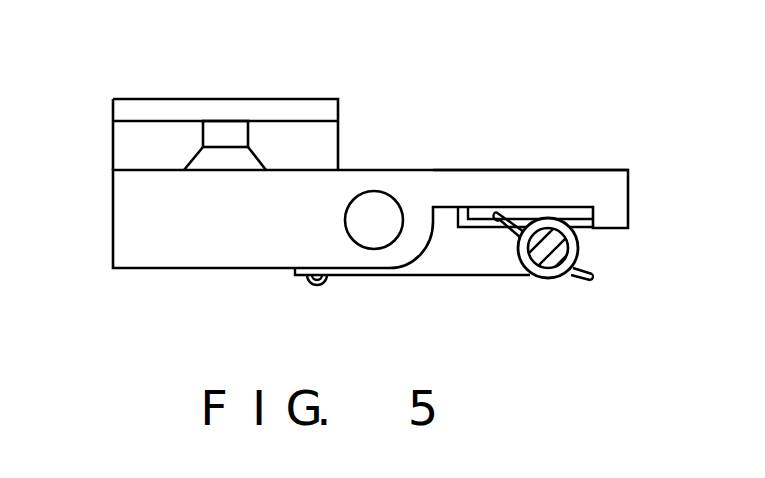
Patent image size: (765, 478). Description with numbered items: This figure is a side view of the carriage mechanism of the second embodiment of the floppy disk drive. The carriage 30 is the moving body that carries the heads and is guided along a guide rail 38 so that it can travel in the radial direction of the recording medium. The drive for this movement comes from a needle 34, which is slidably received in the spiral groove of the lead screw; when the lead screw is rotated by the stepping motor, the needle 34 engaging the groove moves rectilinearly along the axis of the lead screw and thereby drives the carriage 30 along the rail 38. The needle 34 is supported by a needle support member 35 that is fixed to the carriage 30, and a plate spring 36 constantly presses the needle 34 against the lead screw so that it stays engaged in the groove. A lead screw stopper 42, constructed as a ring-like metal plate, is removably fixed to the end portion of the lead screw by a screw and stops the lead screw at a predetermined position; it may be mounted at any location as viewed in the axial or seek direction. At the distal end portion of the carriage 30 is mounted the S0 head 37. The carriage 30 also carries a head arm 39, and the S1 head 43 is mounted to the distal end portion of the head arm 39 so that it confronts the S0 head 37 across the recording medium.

The carriage 30 is at (193, 252).
The needle 34 is at (482, 225).
The needle support member 35 is at (526, 187).
The plate spring 36 is at (400, 270).
The S0 head 37 is at (210, 163).
The guide rail 38 is at (380, 200).
The head arm 39 is at (246, 105).
The lead screw stopper 42 is at (545, 270).
The S1 head 43 is at (205, 134).